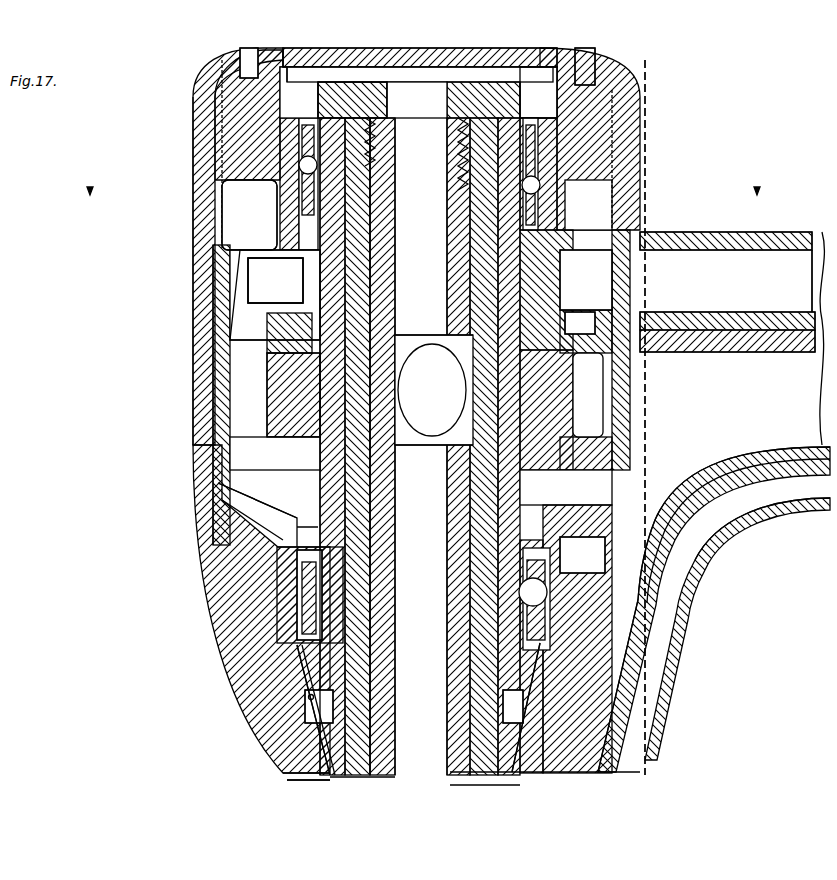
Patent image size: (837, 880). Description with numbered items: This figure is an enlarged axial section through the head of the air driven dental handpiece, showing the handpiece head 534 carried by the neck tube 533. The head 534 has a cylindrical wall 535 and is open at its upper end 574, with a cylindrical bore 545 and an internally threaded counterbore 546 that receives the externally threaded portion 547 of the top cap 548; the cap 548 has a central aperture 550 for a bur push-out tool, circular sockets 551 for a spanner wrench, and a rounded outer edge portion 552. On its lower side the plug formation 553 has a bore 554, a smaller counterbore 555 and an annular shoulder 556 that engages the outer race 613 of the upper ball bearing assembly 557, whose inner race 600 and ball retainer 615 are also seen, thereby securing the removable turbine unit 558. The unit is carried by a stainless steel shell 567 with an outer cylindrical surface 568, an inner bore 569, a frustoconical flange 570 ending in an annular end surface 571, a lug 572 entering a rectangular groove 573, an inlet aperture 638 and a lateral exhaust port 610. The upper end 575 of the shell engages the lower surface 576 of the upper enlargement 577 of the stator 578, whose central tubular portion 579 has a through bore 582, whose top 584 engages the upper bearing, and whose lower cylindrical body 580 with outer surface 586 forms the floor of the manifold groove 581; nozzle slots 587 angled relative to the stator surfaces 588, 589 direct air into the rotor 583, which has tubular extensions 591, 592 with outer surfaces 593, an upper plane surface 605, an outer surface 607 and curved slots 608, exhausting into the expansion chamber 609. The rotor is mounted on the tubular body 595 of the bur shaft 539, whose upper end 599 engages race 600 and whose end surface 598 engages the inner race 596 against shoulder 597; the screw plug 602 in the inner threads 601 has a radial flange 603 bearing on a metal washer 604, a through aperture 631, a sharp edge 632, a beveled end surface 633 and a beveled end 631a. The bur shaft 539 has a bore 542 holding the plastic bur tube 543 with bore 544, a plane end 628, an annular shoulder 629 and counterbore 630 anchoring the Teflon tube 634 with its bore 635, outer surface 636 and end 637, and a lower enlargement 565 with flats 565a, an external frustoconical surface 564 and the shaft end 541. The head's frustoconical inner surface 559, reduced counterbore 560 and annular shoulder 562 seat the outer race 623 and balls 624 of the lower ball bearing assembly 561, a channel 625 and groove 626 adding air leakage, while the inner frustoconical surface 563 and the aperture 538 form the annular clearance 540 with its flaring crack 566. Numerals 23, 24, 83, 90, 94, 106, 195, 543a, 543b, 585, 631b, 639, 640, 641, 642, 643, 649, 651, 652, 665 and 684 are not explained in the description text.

The section line 23- 23 is at (655, 80).
The section line 24- 24 is at (128, 178).
The passage 83 is at (535, 430).
The port 90 is at (532, 462).
The port 94 is at (555, 470).
The passage 106 is at (568, 490).
The outlet pipe 195 is at (780, 497).
The neck tube 533 is at (733, 231).
The handpiece head 534 is at (194, 333).
The cylindrical wall 535 is at (195, 355).
The central circular aperture 538 is at (330, 731).
The bur shaft 539 is at (447, 501).
The annular clearance 540 is at (330, 784).
The end of the bur shaft 541 is at (445, 735).
The cylindrical bore 542 is at (447, 484).
The plastic bur tube 543 is at (445, 328).
The sleeve portion 543a is at (447, 468).
The sleeve portion 543b is at (448, 283).
The cylindrical bore 544 is at (447, 634).
The cylindrical bore 545 is at (225, 372).
The internally threaded counterbore 546 is at (225, 108).
The externally threaded portion 547 is at (575, 150).
The top cap 548 is at (545, 52).
The central aperture 550 is at (440, 58).
The circular sockets 551 is at (254, 62).
The outer edge portion 552 is at (212, 75).
The plug formation 553 is at (245, 162).
The bore 554 is at (222, 138).
The smaller counterbore 555 is at (262, 100).
The annular shoulder 556 is at (225, 118).
The upper ball bearing assembly 557 is at (612, 140).
The removable turbine unit 558 is at (223, 307).
The frustoconical inner surface 559 is at (240, 556).
The reduced counterbore 560 is at (230, 623).
The lower ball bearing assembly 561 is at (655, 572).
The annular shoulder 562 is at (230, 642).
The frustoconical inner surface 563 is at (308, 697).
The external frustoconical surface 564 is at (303, 741).
The enlargement 565 is at (325, 671).
The parallel flats 565a is at (550, 718).
The flaring crack 566 is at (275, 771).
The cylindrical stainless steel shell 567 is at (228, 438).
The outer cylindrical surface 568 is at (215, 462).
The inner cylindrical bore 569 is at (228, 478).
The inwardly extending frustoconical flange 570 is at (228, 478).
The annular end surface 571 is at (227, 577).
The tab or lug 572 is at (215, 270).
The rectangular groove 573 is at (213, 222).
The upper end 574 is at (222, 88).
The upper end of the shell 575 is at (243, 241).
The lower surface 576 is at (251, 302).
The upper enlargement 577 is at (592, 226).
The stator 578 is at (540, 268).
The central tubular portion 579 is at (548, 293).
The lower cylindrical body 580 is at (568, 320).
The annular rectangular groove 581 is at (632, 290).
The central through bore 582 is at (590, 318).
The rotor 583 is at (262, 405).
The top of the stator 584 is at (243, 180).
The chamber 585 is at (275, 278).
The outer cylindrical surface 586 is at (647, 362).
The nozzle slots 587 is at (442, 326).
The upper stator surface 588 is at (462, 305).
The lower stator surface 589 is at (458, 355).
The upper tubular extension 591 is at (285, 322).
The lower tubular extension 592 is at (328, 462).
The cylindrical outer surfaces 593 is at (318, 502).
The tubular body 595 is at (447, 524).
The inner race 596 is at (485, 566).
The annular shoulder 597 is at (465, 648).
The end surface 598 is at (590, 486).
The upper end of the rotor tube 599 is at (500, 207).
The upper ball bearing race 600 is at (512, 120).
The inner threads 601 is at (392, 128).
The screw plug 602 is at (302, 77).
The radial flange 603 is at (346, 62).
The metal washer 604 is at (497, 60).
The upper plane surface 605 is at (640, 386).
The cylindrical outer surface 607 is at (640, 415).
The curved slot 608 is at (410, 413).
The lower expansion chamber 609 is at (220, 440).
The lateral exhaust port 610 is at (640, 441).
The outer race 613 is at (618, 110).
The ball retainer 615 is at (512, 130).
The outer race 623 is at (566, 565).
The balls 624 is at (557, 592).
The channel 625 is at (600, 605).
The groove 626 is at (590, 640).
The plane end 628 is at (600, 778).
The annular shoulder 629 is at (447, 258).
The counterbore 630 is at (447, 240).
The through aperture 631 is at (450, 93).
The beveled end 631a is at (505, 188).
The nut thread 631b is at (455, 160).
The sharp edge 632 is at (440, 182).
The beveled end surface 633 is at (305, 150).
The plastic tube 634 is at (460, 688).
The inner cylindrical bore 635 is at (460, 683).
The outer cylindrical surface 636 is at (476, 777).
The end 637 is at (421, 783).
The rectangular aperture 638 is at (663, 285).
The inlet 639 is at (795, 290).
The outlet chamber 640 is at (810, 416).
The pipe wall 641 is at (680, 318).
The outlet pipe 642 is at (690, 466).
The passage 643 is at (640, 470).
The wall 649 is at (555, 745).
The slot 651 is at (596, 62).
The slot 652 is at (648, 85).
The shoulder 665 is at (490, 700).
The partition 684 is at (555, 695).